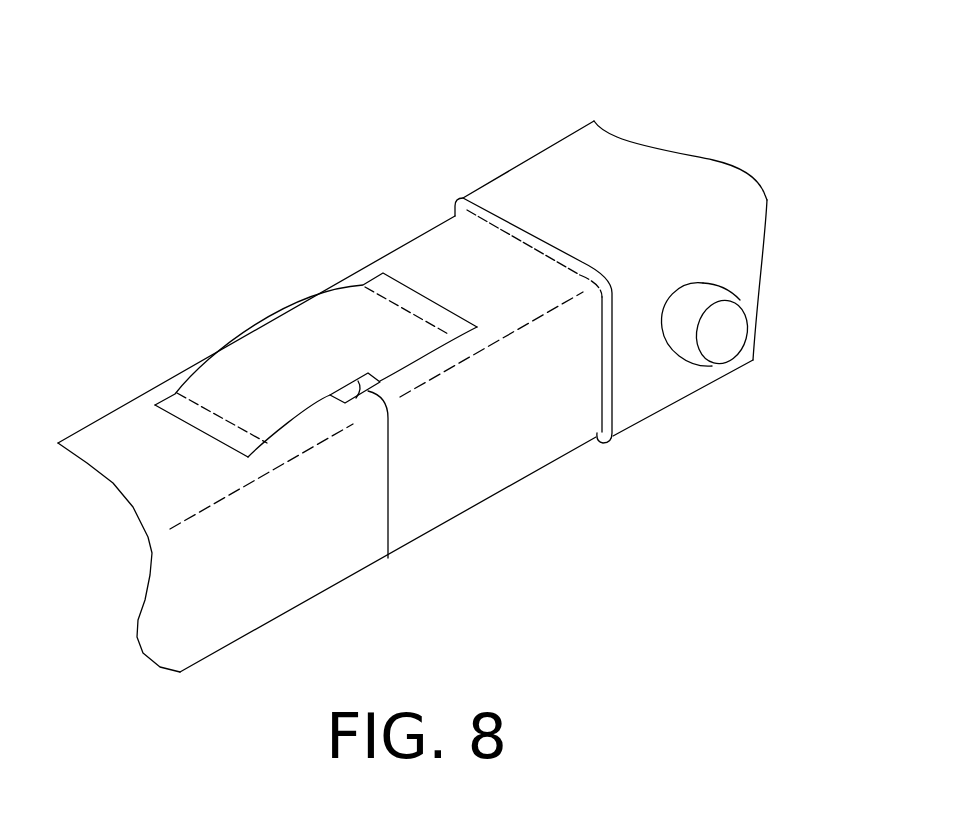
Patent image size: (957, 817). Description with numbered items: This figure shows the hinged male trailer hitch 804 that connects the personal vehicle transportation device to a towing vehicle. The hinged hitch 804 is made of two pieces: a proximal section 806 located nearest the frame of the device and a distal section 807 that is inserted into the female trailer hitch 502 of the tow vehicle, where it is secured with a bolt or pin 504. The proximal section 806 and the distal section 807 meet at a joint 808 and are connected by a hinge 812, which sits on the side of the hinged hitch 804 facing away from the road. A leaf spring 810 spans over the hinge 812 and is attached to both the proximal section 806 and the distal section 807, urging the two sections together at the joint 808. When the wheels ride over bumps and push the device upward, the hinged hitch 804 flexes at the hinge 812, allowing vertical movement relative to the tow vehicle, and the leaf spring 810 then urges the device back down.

The female trailer hitch 502 is at (577, 153).
The bolt or pin 504 is at (723, 345).
The hinged male trailer hitch 804 is at (95, 438).
The proximal section 806 is at (184, 612).
The distal section 807 is at (440, 240).
The joint 808 is at (390, 502).
The leaf spring 810 is at (207, 385).
The hinge 812 is at (380, 376).